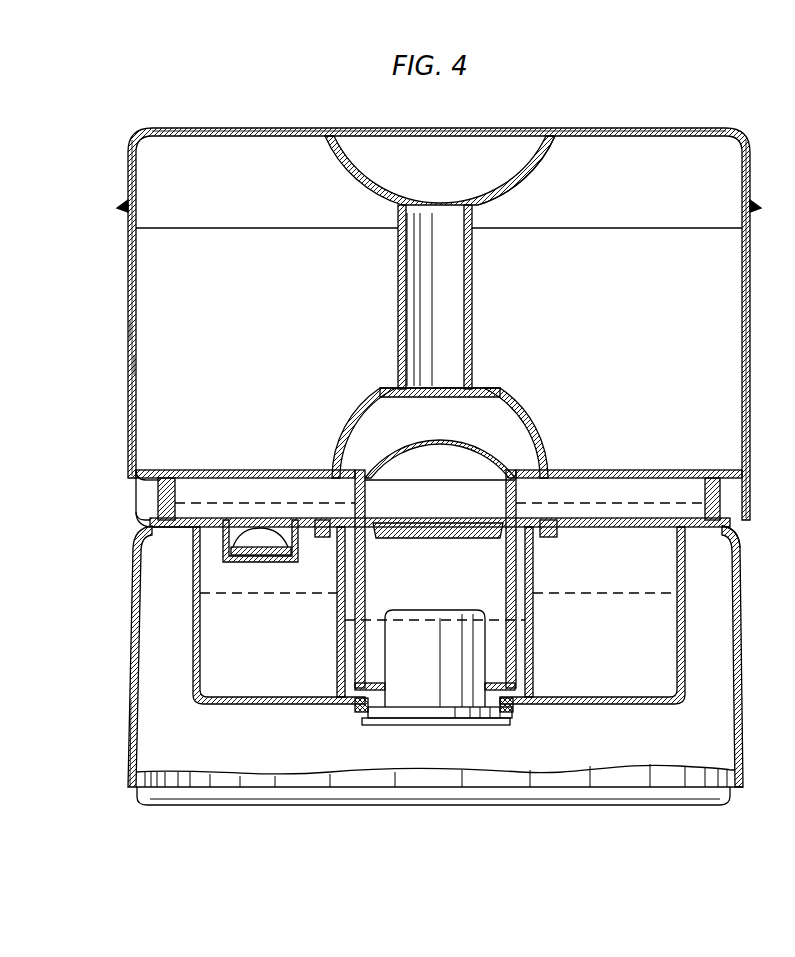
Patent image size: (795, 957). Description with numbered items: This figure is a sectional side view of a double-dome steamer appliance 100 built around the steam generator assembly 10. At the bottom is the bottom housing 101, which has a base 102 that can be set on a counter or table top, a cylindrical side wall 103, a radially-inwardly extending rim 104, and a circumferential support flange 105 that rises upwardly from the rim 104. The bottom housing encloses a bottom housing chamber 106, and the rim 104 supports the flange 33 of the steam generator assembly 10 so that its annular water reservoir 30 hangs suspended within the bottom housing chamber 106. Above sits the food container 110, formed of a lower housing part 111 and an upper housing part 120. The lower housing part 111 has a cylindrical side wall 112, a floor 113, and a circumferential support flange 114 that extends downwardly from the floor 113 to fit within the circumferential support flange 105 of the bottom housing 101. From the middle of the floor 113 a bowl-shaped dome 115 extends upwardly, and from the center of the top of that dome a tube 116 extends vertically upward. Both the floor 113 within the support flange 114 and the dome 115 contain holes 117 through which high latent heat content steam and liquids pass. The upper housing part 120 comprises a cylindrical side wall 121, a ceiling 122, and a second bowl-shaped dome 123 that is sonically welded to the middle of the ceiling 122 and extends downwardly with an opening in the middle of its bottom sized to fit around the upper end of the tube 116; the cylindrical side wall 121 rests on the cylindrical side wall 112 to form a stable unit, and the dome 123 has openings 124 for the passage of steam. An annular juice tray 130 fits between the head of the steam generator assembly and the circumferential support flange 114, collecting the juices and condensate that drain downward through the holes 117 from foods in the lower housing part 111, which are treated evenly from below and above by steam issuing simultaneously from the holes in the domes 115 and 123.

The double-dome steamer appliance 100 is at (140, 114).
The food container 110 is at (130, 293).
The lower housing part 111 is at (128, 330).
The cylindrical side wall 112 is at (128, 364).
The floor 113 is at (163, 474).
The circumferential support flange 114 is at (175, 482).
The bowl-shaped dome 115 is at (366, 404).
The tube 116 is at (398, 310).
The holes 117 is at (297, 470).
The upper housing part 120 is at (128, 190).
The cylindrical side wall 121 is at (747, 180).
The ceiling 122 is at (690, 128).
The bowl-shaped dome 123 is at (358, 185).
The openings 124 is at (528, 182).
The circumferential support flange 105 is at (156, 506).
The annular juice tray 130 is at (152, 517).
The radially-inwardly extending rim 104 is at (178, 540).
The flange 33 is at (735, 546).
The bottom housing 101 is at (128, 690).
The cylindrical side wall 103 is at (127, 722).
The base 102 is at (188, 798).
The steam generator assembly 10 is at (243, 706).
The annular water reservoir 30 is at (672, 706).
The bottom housing chamber 106 is at (573, 750).